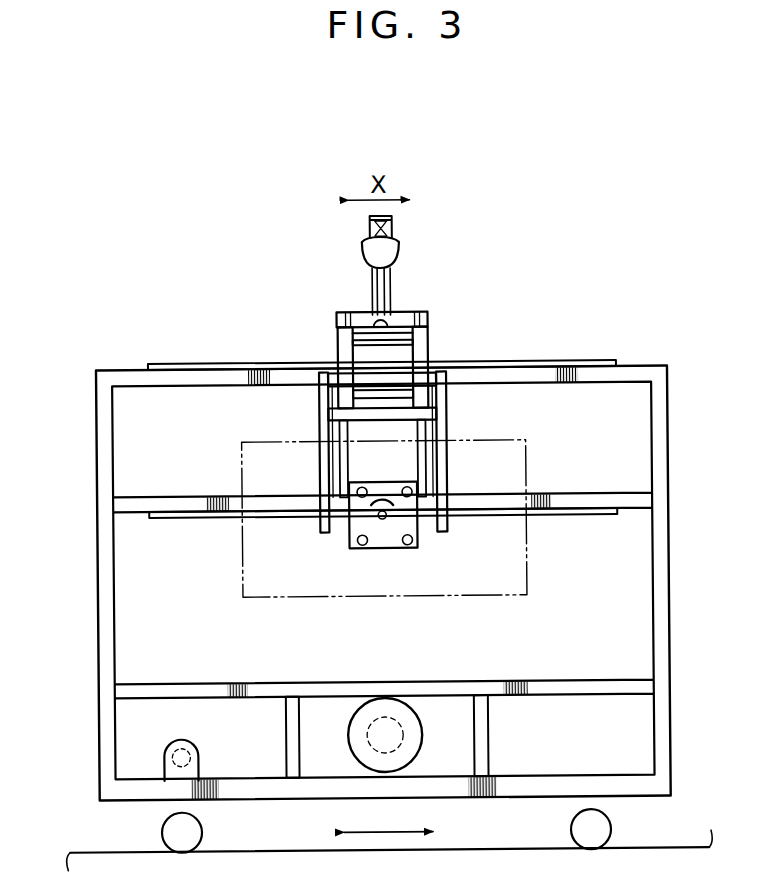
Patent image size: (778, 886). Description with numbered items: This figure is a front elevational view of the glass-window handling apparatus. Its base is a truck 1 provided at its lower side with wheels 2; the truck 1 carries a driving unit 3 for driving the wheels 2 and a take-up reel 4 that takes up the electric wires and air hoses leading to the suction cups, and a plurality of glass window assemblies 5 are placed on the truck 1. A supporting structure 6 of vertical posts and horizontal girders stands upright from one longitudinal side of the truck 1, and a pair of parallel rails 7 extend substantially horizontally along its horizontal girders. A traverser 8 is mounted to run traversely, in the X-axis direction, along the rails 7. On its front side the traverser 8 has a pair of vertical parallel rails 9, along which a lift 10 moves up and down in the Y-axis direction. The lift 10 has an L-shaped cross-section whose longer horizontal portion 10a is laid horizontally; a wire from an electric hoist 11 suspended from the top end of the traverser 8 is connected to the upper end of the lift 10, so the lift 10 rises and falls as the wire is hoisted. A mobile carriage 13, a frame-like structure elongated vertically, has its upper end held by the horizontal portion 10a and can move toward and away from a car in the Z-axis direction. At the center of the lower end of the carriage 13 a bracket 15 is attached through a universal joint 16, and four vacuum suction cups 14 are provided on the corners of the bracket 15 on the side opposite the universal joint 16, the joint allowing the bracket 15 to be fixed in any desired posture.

The truck 1 is at (90, 738).
The wheels 2 is at (159, 831).
The driving unit 3 is at (198, 752).
The take-up reel 4 is at (422, 735).
The glass window assemblies 5 is at (322, 602).
The supporting structure 6 is at (676, 579).
The rails 7 is at (538, 361).
The traverser 8 is at (436, 313).
The vertical parallel rails 9 is at (349, 313).
The lift 10 is at (345, 342).
The horizontal portion 10a is at (354, 382).
The electric hoist 11 is at (398, 258).
The mobile carriage 13 is at (325, 522).
The vacuum suction cups 14 is at (404, 487).
The bracket 15 is at (392, 549).
The universal joint 16 is at (380, 518).